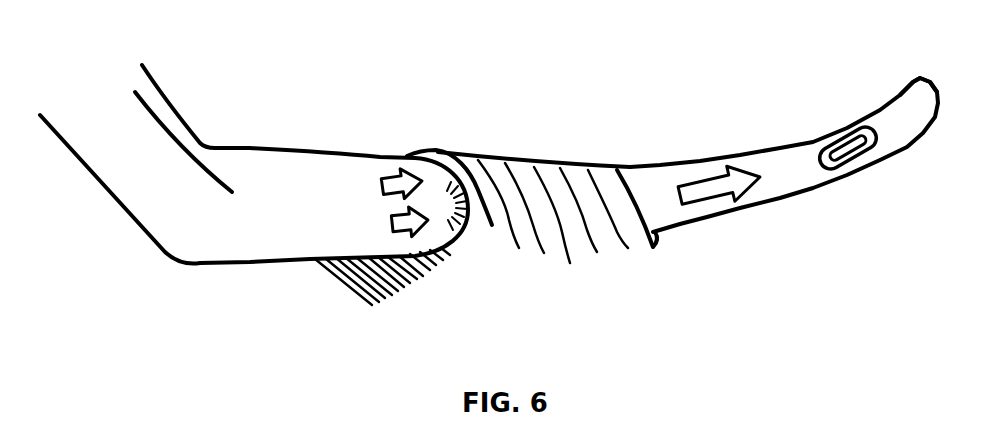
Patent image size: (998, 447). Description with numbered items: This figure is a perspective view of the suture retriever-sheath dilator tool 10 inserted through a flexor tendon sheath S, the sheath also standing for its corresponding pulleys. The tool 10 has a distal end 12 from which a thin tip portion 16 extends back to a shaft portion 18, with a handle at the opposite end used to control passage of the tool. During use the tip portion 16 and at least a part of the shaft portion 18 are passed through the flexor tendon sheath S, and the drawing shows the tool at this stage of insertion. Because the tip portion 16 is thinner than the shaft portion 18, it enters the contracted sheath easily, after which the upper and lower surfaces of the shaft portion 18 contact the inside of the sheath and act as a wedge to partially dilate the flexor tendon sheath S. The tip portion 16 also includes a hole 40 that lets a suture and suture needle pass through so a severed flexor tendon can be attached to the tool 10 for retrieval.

The suture retriever-sheath dilator tool 10 is at (651, 167).
The distal end 12 is at (932, 83).
The tip portion 16 is at (812, 139).
The shaft portion 18 is at (246, 248).
The hole 40 is at (845, 132).
The flexor tendon sheath S is at (492, 205).